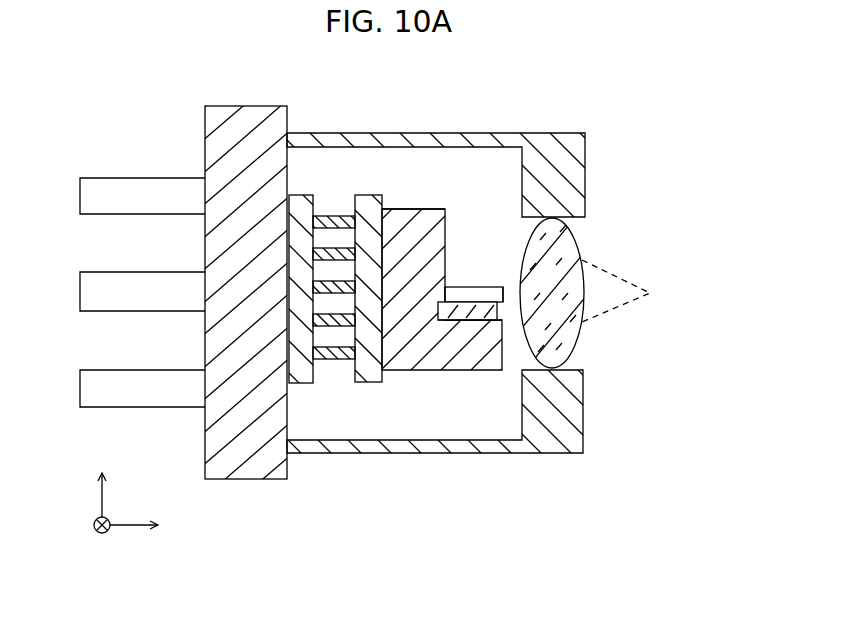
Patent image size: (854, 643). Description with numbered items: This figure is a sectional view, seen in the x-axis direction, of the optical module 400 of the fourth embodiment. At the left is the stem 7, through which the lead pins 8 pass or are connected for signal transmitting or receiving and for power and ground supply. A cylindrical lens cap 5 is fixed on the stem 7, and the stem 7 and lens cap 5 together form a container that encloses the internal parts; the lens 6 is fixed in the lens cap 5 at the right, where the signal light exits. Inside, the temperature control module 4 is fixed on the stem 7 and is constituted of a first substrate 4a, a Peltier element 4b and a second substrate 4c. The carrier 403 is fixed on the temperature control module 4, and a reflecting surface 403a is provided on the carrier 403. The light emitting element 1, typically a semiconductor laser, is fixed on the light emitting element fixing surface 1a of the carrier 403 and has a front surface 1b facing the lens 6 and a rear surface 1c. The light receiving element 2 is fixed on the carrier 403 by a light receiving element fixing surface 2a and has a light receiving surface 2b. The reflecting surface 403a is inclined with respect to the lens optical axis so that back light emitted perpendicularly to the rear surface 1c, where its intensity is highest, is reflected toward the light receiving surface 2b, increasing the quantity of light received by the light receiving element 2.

The optical module 400 is at (180, 69).
The stem 7 is at (219, 480).
The lead pins 8 is at (104, 188).
The cylindrical lens cap 5 is at (560, 136).
The temperature control module 4 is at (335, 313).
The first substrate 4a is at (302, 204).
The Peltier element 4b is at (334, 306).
The second substrate 4c is at (369, 203).
The carrier 403 is at (438, 309).
The reflecting surface 403a is at (405, 209).
The light emitting element 1 is at (469, 292).
The light emitting element fixing surface 1a is at (488, 322).
The front surface 1b is at (502, 298).
The rear surface 1c is at (444, 288).
The light receiving element 2 is at (465, 322).
The light receiving element fixing surface 2a is at (441, 322).
The light receiving surface 2b is at (466, 322).
The lens 6 is at (579, 350).